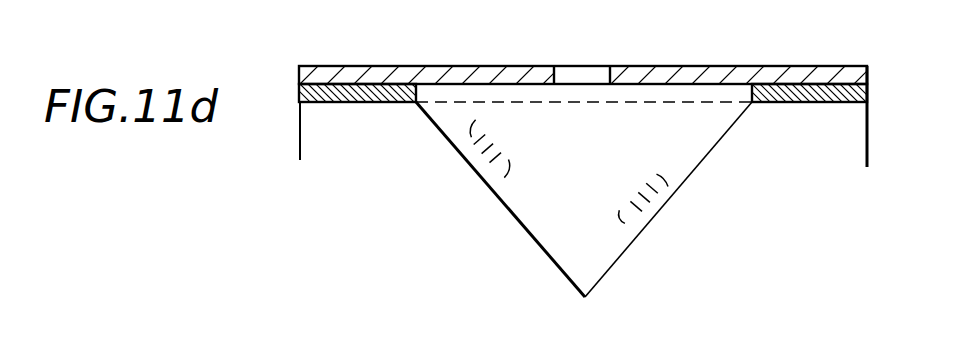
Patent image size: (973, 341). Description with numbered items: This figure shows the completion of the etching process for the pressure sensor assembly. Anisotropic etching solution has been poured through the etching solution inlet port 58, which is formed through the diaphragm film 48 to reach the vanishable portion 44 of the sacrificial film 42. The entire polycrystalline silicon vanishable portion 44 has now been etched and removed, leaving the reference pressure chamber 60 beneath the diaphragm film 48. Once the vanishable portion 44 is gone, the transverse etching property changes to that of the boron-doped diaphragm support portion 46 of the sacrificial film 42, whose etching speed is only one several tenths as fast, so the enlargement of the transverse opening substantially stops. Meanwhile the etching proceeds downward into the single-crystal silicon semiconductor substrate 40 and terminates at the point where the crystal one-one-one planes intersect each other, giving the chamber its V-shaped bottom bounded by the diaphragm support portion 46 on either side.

The semiconductor substrate 40 is at (847, 149).
The sacrificial film 42 is at (358, 82).
The vanishable portion 44 is at (725, 92).
The diaphragm support portion 46 is at (858, 95).
The diaphragm film 48 is at (852, 70).
The etching solution inlet port 58 is at (597, 73).
The reference pressure chamber 60 is at (600, 242).